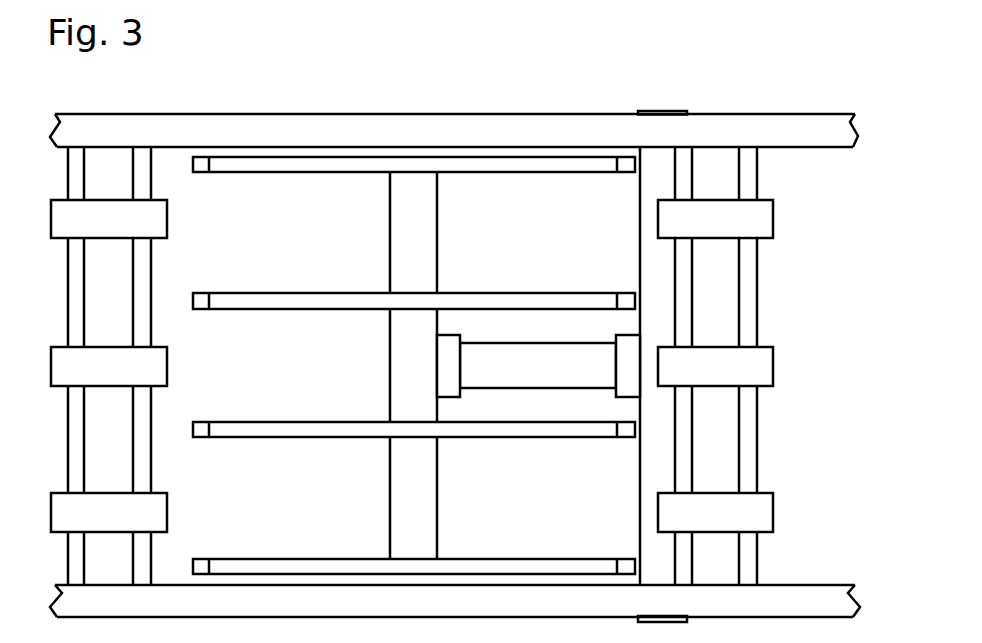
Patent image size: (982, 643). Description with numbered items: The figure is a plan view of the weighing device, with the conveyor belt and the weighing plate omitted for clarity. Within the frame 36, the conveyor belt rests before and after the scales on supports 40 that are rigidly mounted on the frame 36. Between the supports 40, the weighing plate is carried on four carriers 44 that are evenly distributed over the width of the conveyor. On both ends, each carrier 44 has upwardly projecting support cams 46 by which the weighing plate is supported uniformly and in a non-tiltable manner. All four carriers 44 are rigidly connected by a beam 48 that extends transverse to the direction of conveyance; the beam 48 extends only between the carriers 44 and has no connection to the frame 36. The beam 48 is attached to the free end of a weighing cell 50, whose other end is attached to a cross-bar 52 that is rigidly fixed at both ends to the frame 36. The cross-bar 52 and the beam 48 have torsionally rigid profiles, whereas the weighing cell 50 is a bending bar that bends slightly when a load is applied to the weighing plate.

The frame 36 is at (412, 133).
The support 40 is at (152, 362).
The carrier 44 is at (333, 167).
The support cam 46 is at (625, 168).
The beam 48 is at (397, 344).
The weighing cell 50 is at (545, 388).
The cross-bar 52 is at (649, 488).